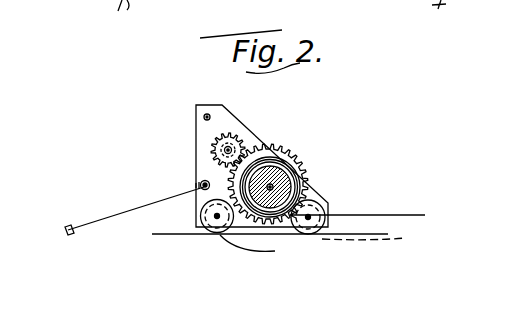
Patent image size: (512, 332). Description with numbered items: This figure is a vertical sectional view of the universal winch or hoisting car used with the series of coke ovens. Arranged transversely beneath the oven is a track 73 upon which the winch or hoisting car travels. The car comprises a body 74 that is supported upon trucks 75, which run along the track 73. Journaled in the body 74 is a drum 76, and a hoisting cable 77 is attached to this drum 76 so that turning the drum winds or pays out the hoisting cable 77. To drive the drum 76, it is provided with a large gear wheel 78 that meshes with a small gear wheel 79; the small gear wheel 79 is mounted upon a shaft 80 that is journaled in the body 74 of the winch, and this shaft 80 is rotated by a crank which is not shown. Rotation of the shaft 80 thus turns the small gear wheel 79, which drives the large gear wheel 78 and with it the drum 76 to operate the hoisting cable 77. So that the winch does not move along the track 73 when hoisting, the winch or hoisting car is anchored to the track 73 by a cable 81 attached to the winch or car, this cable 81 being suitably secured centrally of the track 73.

The track 73 is at (337, 234).
The body 74 is at (207, 163).
The trucks 75 is at (458, 230).
The drum 76 is at (274, 166).
The hoisting cable 77 is at (382, 212).
The large gear wheel 78 is at (300, 150).
The small gear wheel 79 is at (228, 131).
The shaft 80 is at (240, 139).
The cable 81 is at (107, 208).